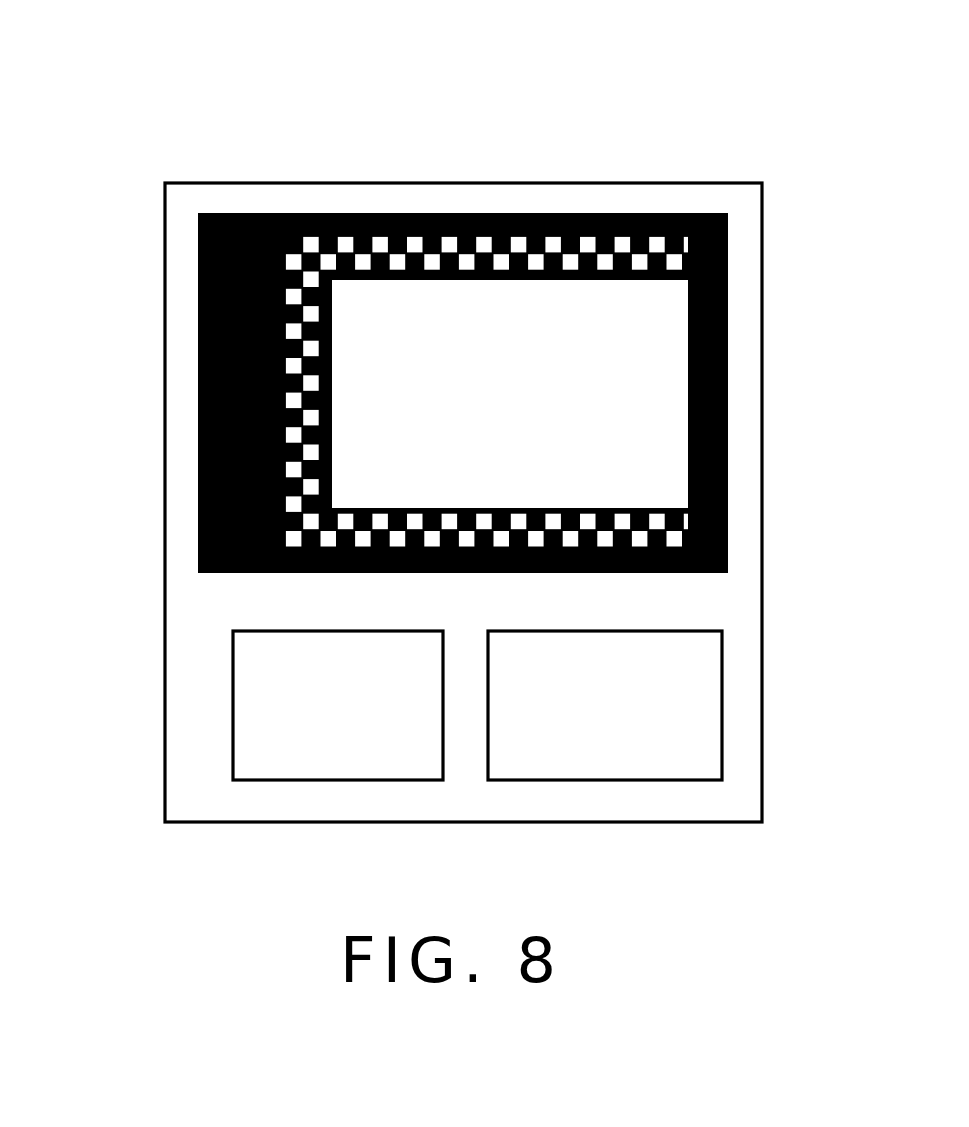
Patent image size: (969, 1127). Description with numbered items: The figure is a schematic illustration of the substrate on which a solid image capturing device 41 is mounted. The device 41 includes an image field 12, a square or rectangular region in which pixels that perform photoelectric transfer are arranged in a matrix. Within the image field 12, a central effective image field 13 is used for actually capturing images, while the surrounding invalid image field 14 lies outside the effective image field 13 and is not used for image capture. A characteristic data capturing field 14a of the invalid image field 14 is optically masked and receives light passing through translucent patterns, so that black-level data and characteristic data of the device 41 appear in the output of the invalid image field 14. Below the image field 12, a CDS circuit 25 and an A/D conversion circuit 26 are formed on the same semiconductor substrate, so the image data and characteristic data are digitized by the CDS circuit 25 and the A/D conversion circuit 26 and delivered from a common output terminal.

The solid image capturing device 41 is at (430, 165).
The image field 12 is at (573, 214).
The effective image field 13 is at (617, 332).
The invalid image field 14 is at (728, 310).
The characteristic data capturing field 14a is at (370, 215).
The CDS circuit 25 is at (248, 692).
The A/D conversion circuit 26 is at (713, 673).